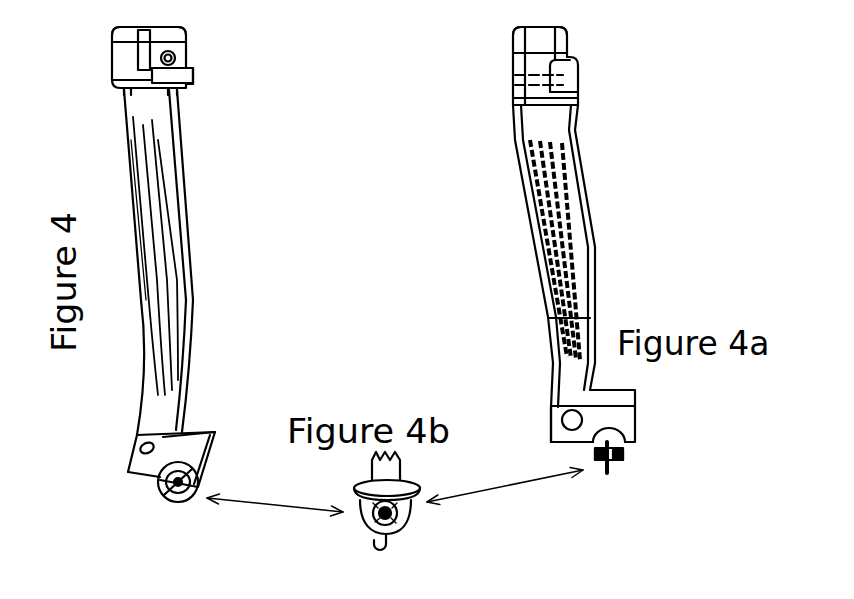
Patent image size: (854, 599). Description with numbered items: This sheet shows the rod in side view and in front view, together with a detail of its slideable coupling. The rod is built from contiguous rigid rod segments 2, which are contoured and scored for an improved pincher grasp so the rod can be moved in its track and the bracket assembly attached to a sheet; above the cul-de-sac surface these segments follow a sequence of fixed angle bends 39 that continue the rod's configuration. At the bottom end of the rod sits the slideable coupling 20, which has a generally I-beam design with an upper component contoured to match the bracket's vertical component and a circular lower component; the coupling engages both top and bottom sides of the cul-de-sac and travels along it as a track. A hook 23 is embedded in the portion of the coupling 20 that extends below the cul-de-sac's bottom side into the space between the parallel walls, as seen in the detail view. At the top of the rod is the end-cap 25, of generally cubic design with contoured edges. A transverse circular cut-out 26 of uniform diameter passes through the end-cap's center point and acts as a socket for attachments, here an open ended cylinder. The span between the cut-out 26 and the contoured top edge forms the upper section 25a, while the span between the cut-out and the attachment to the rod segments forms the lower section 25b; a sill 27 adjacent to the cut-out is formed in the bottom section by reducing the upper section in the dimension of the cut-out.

In FIG. 4a, the rigid rod segments 2 is at (552, 283).
In FIG. 4, the slideable coupling 20 is at (157, 487).
In FIG. 4a, the slideable coupling 20 is at (628, 450).
In FIG. 4b, the hook 23 is at (402, 508).
In FIG. 4, the end-cap 25 is at (226, 43).
In FIG. 4a, the end-cap 25 is at (512, 43).
In FIG. 4, the upper section of the end-cap 25a is at (112, 60).
In FIG. 4a, the lower section of the end-cap 25b is at (580, 98).
In FIG. 4, the transverse circular cut-out 26 is at (181, 62).
In FIG. 4a, the transverse circular cut-out 26 is at (512, 82).
In FIG. 4, the sill 27 is at (188, 64).
In FIG. 4a, the sill 27 is at (569, 72).
In FIG. 4a, the fixed angle bends 39 is at (580, 153).